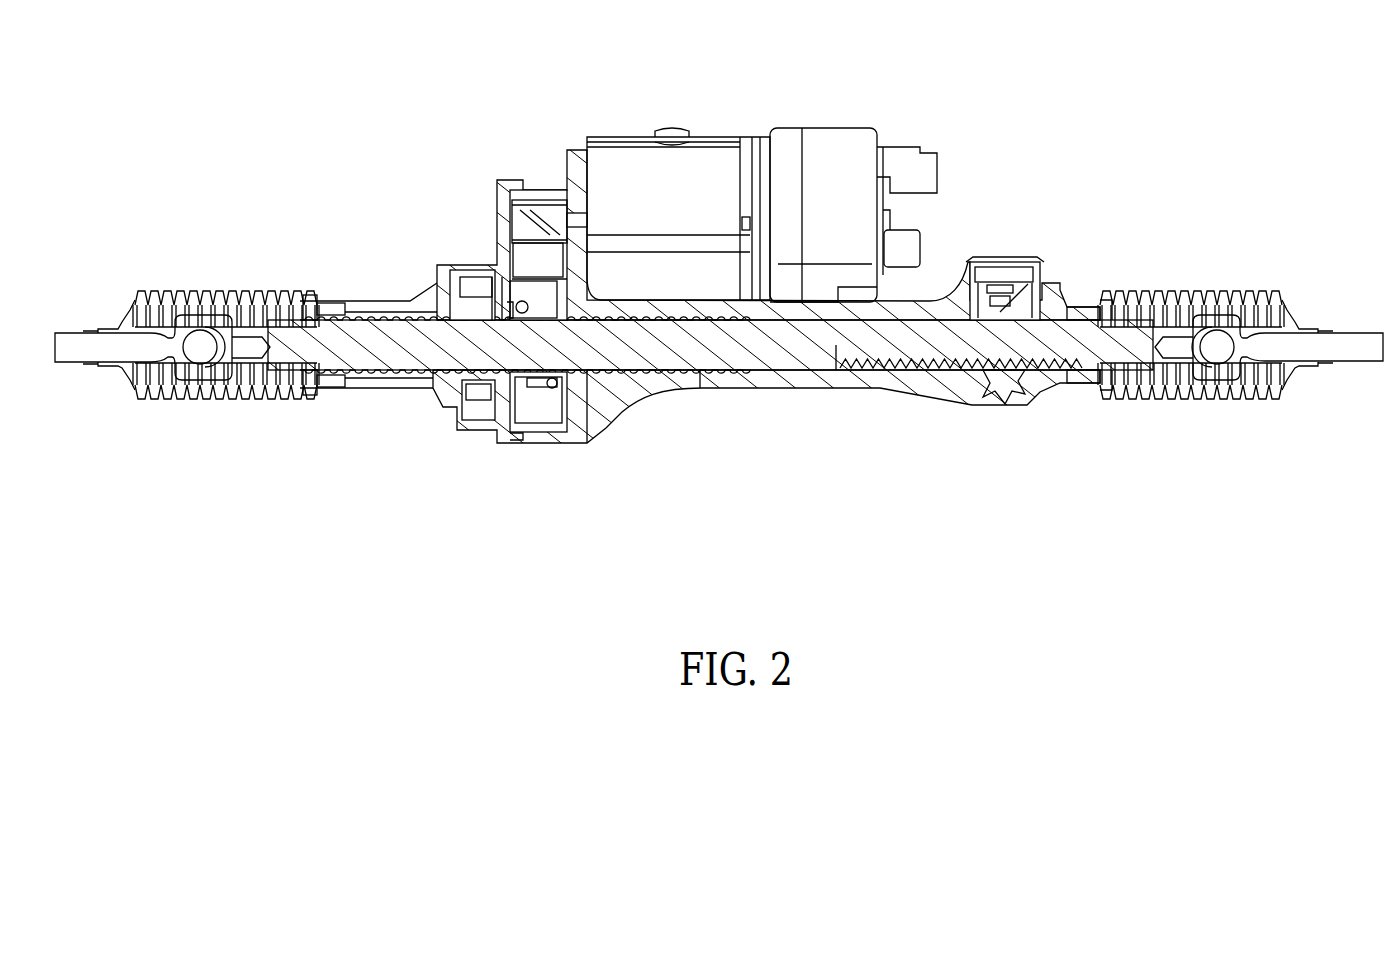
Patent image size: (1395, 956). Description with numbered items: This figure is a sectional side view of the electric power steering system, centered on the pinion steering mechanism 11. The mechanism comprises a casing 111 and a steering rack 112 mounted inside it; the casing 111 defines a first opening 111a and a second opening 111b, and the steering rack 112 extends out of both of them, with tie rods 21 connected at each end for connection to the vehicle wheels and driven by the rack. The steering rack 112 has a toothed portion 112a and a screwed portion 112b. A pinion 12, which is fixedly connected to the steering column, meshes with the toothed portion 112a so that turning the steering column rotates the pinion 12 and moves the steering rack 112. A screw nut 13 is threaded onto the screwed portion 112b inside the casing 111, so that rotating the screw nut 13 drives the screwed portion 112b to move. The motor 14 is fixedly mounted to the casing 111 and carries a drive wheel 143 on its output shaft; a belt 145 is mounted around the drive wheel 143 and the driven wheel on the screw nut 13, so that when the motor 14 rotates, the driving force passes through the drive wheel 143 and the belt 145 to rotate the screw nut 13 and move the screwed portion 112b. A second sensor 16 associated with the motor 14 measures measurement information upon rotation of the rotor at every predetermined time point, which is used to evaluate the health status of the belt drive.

The pinion steering mechanism 11 is at (719, 316).
The casing 111 is at (753, 388).
The first opening 111a is at (1108, 385).
The second opening 111b is at (312, 388).
The steering rack 112 is at (710, 404).
The toothed portion 112a is at (940, 372).
The screwed portion 112b is at (432, 375).
The pinion 12 is at (1005, 383).
The screw nut 13 is at (567, 283).
The motor 14 is at (710, 135).
The drive wheel 143 is at (548, 207).
The belt 145 is at (530, 258).
The second sensor 16 is at (828, 143).
The tie rods 21 is at (62, 350).